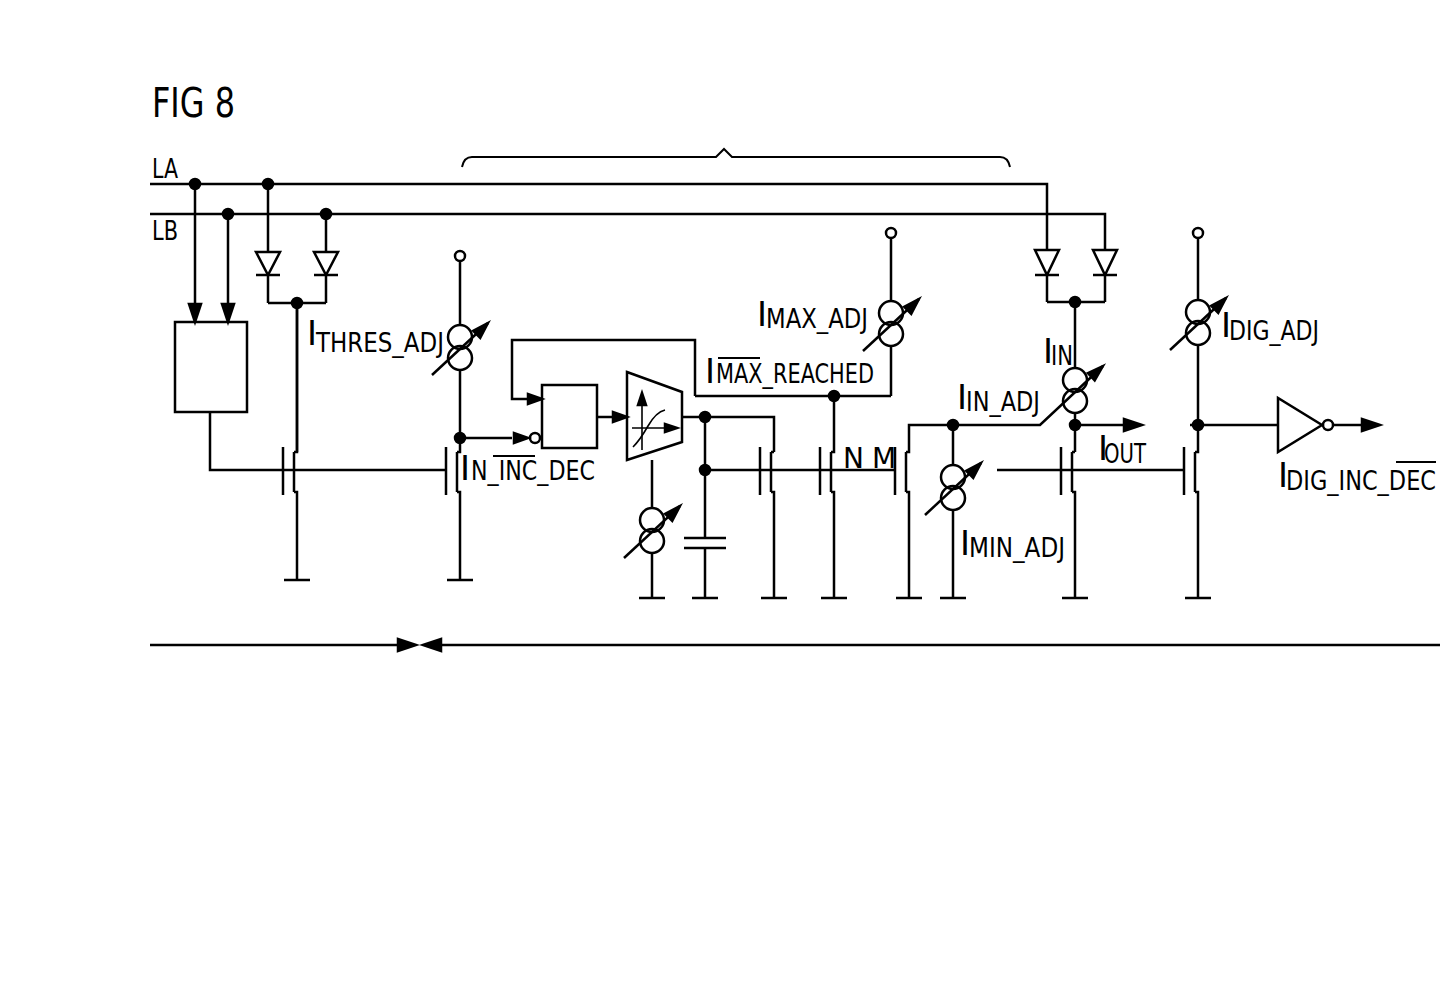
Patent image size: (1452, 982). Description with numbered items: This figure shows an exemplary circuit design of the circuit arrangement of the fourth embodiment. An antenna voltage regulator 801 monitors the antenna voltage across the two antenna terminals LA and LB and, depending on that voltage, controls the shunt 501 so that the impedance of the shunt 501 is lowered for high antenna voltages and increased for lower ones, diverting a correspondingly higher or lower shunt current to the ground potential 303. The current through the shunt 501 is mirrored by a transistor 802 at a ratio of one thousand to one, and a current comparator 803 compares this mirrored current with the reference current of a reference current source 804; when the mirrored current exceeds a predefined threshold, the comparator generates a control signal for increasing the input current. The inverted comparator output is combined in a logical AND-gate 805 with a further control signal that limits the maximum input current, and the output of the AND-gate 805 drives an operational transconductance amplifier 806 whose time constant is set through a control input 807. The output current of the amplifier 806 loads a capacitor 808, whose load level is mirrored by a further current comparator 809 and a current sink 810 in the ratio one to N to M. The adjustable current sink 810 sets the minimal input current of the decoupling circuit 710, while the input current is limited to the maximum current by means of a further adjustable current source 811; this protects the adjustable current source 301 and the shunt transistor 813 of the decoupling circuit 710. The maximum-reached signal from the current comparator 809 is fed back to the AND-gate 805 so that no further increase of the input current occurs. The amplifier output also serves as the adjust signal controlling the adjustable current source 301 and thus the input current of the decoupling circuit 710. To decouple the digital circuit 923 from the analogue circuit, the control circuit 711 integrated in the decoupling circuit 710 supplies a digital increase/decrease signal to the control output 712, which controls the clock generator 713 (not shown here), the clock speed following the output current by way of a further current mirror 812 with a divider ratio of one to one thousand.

The antenna voltage regulator 801 is at (192, 412).
The transistor 802 is at (446, 482).
The current comparator 803 is at (458, 401).
The reference current source 804 is at (493, 303).
The logical AND-gate 805 is at (598, 448).
The operational transconductance amplifier 806 is at (627, 384).
The control input 807 is at (642, 537).
The capacitor 808 is at (690, 560).
The current comparator 809 is at (792, 473).
The adjustable current sink 810 is at (975, 503).
The adjustable current source 811 is at (900, 303).
The current mirror 812 is at (1188, 493).
The shunt transistor 813 is at (1075, 479).
The adjustable current source 301 is at (1090, 372).
The ground potential 303 is at (378, 471).
The shunt 501 is at (252, 648).
The decoupling circuit 710 is at (725, 648).
The control circuit 711 is at (736, 137).
The control output 712 is at (1305, 408).
The clock generator 713 is at (1381, 425).
The digital circuit 923 is at (1131, 425).